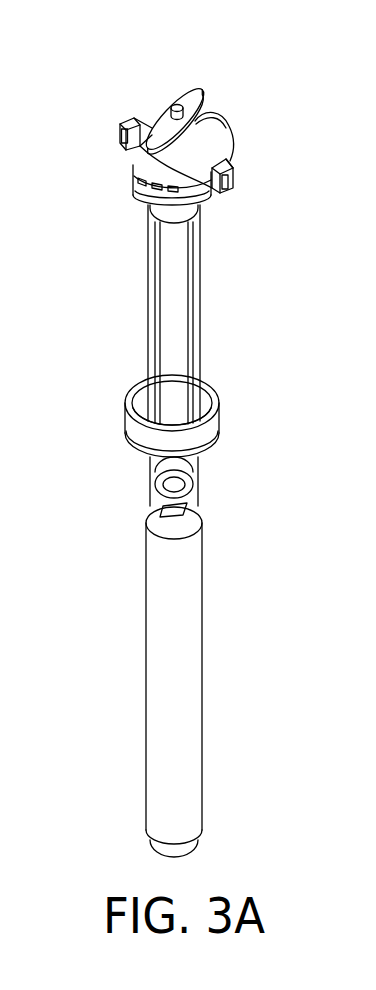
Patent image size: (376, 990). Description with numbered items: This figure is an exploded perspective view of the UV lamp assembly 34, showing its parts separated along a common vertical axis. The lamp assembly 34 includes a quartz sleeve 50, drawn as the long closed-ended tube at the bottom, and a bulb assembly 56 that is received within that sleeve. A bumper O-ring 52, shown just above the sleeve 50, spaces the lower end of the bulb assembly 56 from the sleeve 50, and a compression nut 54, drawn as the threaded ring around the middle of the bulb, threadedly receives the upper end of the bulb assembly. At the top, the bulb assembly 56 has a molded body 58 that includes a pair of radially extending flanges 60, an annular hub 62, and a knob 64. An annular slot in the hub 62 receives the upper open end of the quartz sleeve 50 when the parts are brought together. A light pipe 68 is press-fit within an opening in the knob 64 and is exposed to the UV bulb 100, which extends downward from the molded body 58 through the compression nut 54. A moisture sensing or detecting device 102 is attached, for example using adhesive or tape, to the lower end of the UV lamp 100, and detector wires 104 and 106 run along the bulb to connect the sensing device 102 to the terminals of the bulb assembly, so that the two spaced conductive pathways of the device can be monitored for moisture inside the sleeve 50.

The UV lamp assembly 34 is at (243, 210).
The quartz sleeve 50 is at (202, 660).
The bumper O-ring 52 is at (195, 482).
The compression nut 54 is at (238, 418).
The bulb assembly 56 is at (244, 143).
The molded body 58 is at (205, 137).
The radially extending flanges 60 is at (133, 120).
The annular hub 62 is at (150, 165).
The knob 64 is at (202, 92).
The light pipe 68 is at (177, 104).
The UV bulb 100 is at (190, 308).
The moisture sensing device 102 is at (163, 510).
The detector wire 104 is at (148, 262).
The detector wire 106 is at (200, 270).